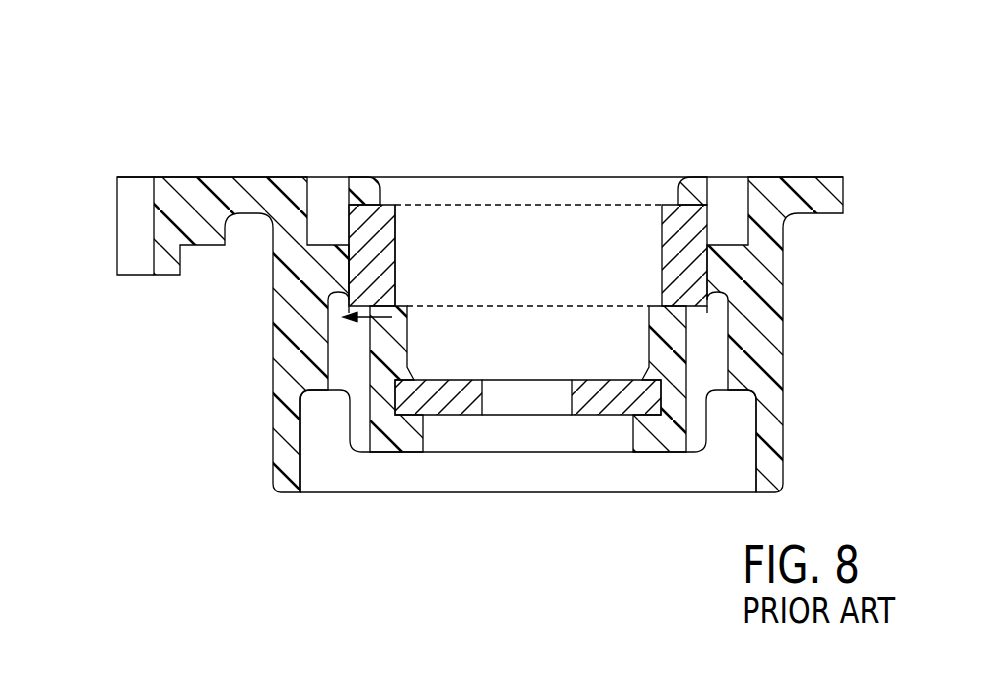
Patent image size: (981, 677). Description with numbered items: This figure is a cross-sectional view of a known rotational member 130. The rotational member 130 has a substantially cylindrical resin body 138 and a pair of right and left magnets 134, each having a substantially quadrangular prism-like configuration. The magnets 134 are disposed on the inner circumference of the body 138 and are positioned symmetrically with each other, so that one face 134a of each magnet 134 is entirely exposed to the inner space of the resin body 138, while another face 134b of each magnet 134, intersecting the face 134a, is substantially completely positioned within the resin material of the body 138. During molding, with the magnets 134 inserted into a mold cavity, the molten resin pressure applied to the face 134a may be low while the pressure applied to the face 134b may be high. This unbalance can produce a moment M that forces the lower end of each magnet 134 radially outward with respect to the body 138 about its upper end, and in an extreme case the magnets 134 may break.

The rotational member 130 is at (140, 135).
The resin body 138 is at (282, 177).
The magnets 134 is at (397, 205).
The face 134a is at (395, 258).
The face 134b is at (349, 267).